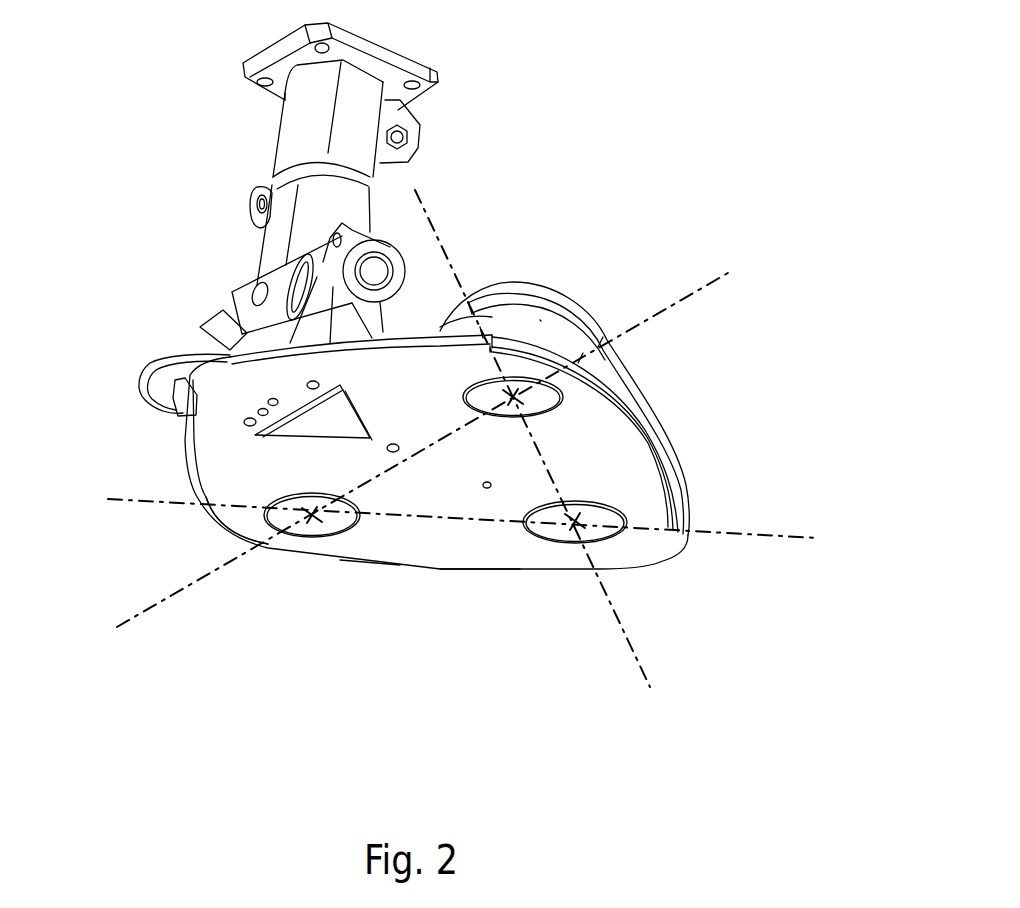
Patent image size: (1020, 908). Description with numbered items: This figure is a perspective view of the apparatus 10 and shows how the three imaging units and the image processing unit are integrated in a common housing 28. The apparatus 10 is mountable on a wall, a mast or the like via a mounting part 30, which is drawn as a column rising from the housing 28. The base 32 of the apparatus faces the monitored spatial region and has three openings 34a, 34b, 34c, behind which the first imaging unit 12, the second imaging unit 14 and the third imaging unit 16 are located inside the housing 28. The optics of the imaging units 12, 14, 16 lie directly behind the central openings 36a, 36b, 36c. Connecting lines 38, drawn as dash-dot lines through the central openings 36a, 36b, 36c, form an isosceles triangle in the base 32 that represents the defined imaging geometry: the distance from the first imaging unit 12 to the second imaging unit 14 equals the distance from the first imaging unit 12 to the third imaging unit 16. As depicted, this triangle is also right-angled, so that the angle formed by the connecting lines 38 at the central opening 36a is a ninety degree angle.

The apparatus 10 is at (632, 158).
The first imaging unit 12 is at (578, 511).
The second imaging unit 14 is at (287, 527).
The third imaging unit 16 is at (540, 305).
The housing 28 is at (480, 558).
The mounting part 30 is at (277, 187).
The base 32 is at (367, 553).
The opening 34a is at (555, 543).
The opening 34b is at (325, 537).
The opening 34c is at (563, 412).
The central opening 36a is at (580, 513).
The central opening 36b is at (310, 515).
The central opening 36c is at (515, 397).
The connecting lines 38 is at (437, 226).